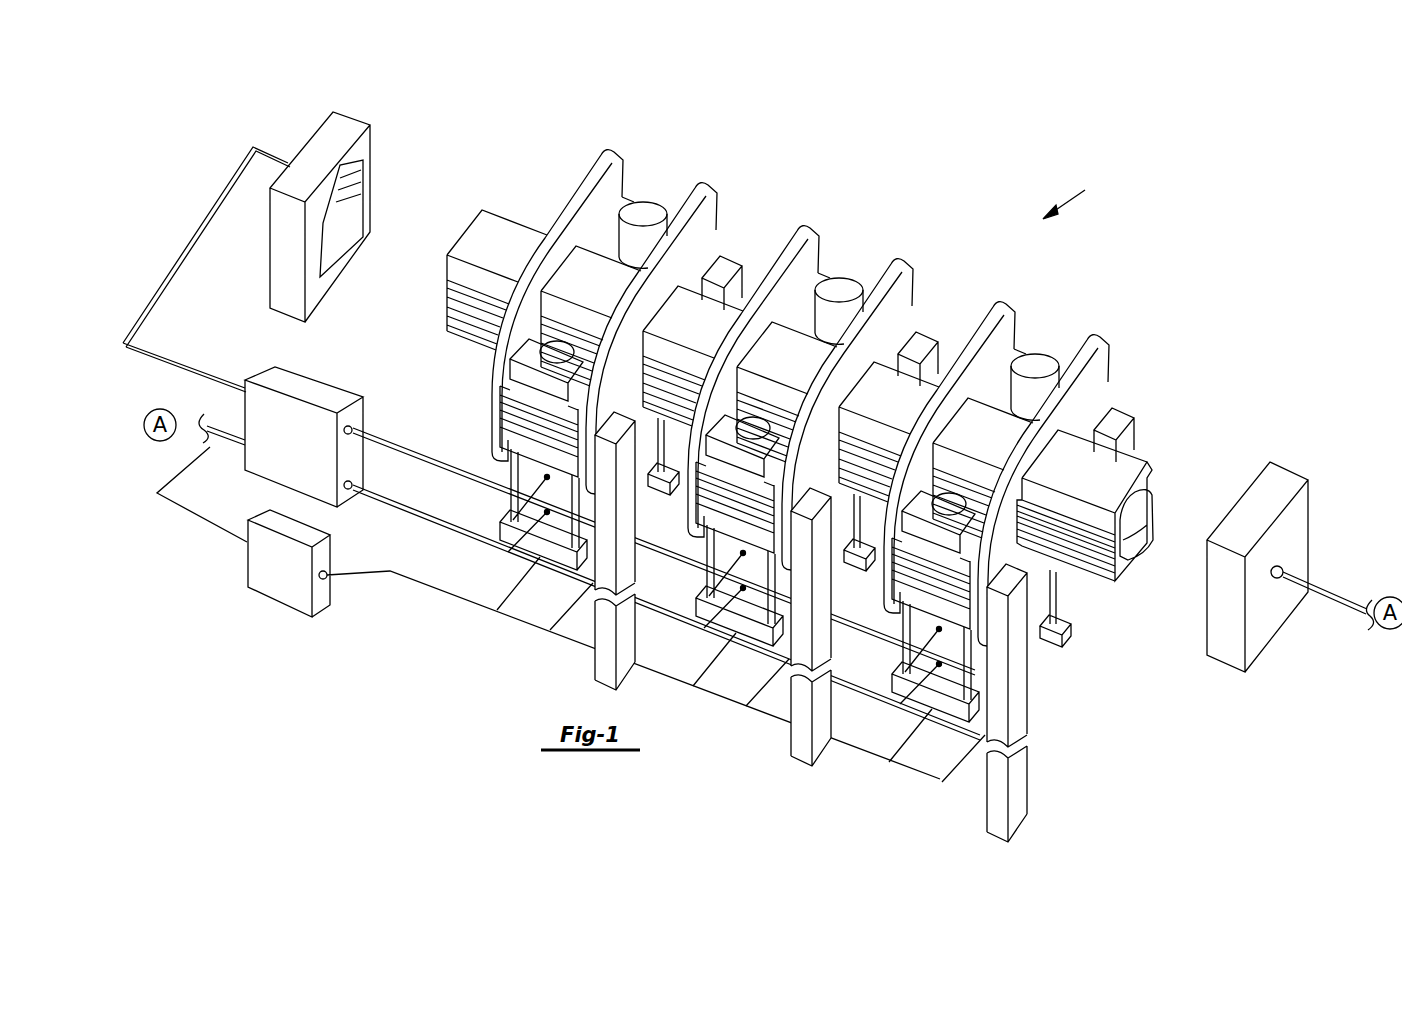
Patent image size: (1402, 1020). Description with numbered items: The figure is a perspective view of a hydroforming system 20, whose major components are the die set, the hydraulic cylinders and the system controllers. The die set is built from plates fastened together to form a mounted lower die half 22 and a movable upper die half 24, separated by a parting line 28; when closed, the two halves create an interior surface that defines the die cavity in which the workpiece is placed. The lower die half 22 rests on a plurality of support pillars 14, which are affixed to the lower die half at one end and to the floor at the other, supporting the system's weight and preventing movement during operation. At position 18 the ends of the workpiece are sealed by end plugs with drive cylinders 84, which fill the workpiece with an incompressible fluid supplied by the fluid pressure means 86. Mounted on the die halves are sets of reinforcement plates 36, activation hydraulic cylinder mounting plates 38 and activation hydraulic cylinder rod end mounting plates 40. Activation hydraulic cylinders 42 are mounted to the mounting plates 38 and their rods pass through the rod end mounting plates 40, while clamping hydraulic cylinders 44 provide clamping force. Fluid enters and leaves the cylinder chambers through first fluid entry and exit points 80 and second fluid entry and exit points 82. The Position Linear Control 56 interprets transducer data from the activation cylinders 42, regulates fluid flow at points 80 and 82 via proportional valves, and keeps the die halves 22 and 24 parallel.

The support pillars 14 is at (727, 259).
The position of end plugs 18 is at (441, 277).
The hydroforming system 20 is at (1077, 192).
The lower die half 22 is at (1147, 543).
The upper die half 24 is at (1137, 458).
The parting line 28 is at (641, 326).
The reinforcement plates 36 is at (699, 186).
The activation hydraulic cylinder mounting plates 38 is at (550, 433).
The activation hydraulic cylinder rod end mounting plates 40 is at (575, 427).
The activation hydraulic cylinders 42 is at (647, 455).
The clamping hydraulic cylinders 44 is at (500, 526).
The Position Linear Control (PLC) 56 is at (248, 560).
The first fluid entry and exit points 80 is at (547, 512).
The second fluid entry and exit points 82 is at (547, 477).
The end plugs with drive cylinders 84 is at (334, 112).
The fluid pressure means 86 is at (322, 386).